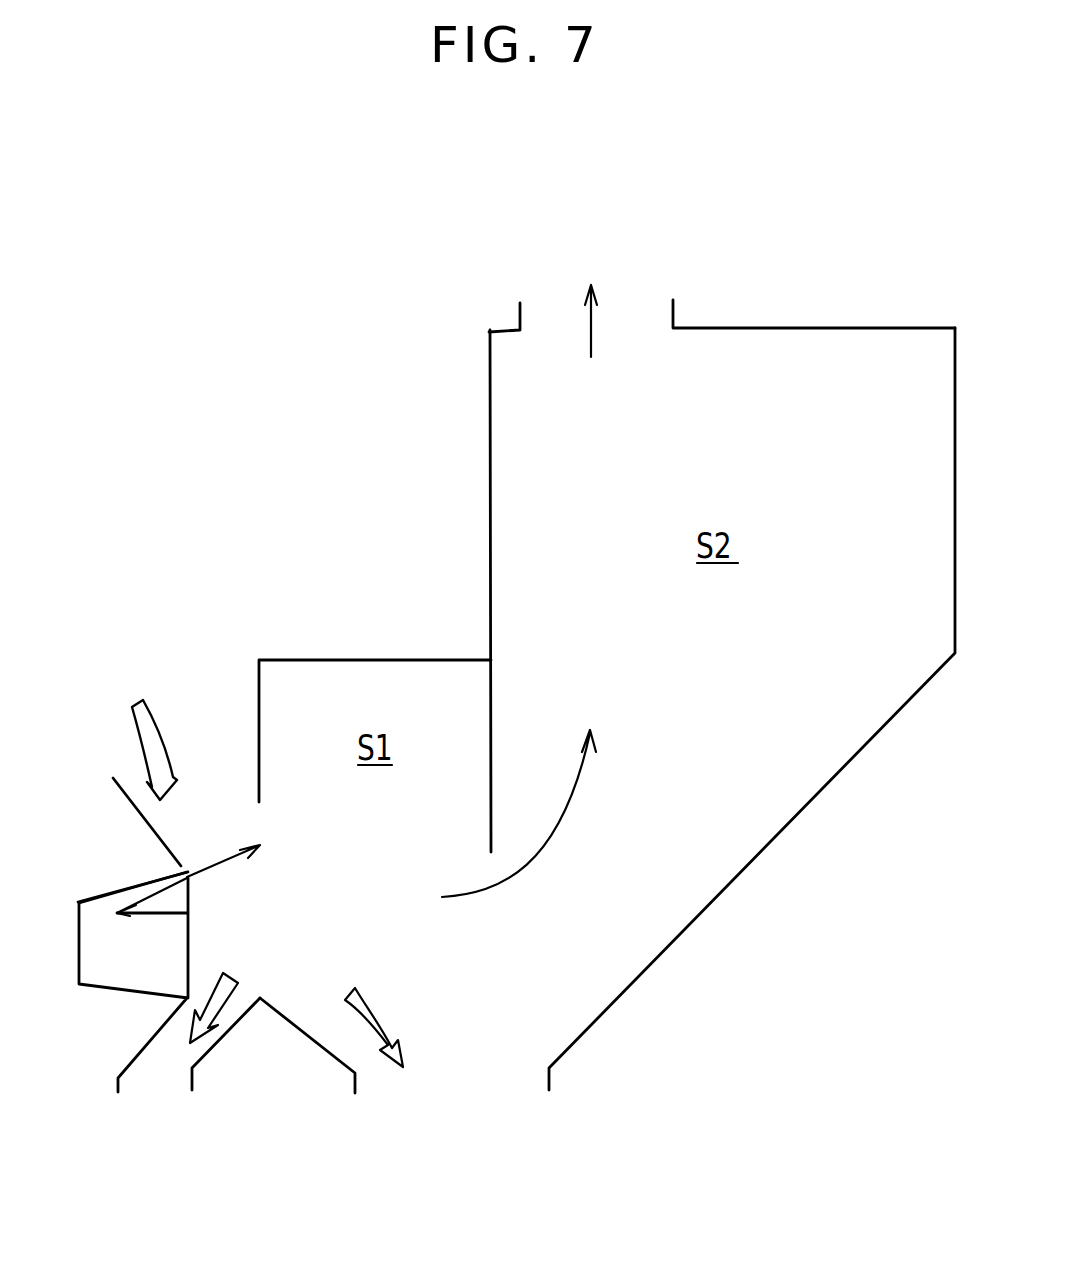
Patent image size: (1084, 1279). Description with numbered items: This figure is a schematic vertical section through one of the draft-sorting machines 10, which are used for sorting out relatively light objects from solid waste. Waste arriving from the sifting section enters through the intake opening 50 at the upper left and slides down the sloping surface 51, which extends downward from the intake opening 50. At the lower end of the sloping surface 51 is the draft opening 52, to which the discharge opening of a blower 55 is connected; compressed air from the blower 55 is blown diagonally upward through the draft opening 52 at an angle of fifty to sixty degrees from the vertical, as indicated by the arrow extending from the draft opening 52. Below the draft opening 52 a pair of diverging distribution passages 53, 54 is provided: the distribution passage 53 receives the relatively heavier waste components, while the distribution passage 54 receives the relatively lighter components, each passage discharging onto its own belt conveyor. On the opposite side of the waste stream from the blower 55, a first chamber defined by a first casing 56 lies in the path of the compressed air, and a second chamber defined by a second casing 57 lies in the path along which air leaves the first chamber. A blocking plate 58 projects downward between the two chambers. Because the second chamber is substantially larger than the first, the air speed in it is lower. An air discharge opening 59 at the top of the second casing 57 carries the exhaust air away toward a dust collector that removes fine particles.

The draft-sorting machine 10 is at (835, 928).
The intake opening 50 is at (223, 783).
The sloping surface 51 is at (135, 797).
The draft opening 52 is at (190, 878).
The distribution passage 53 is at (195, 1060).
The distribution passage 54 is at (365, 1065).
The blower 55 is at (138, 972).
The first casing 56 is at (320, 660).
The second casing 57 is at (800, 328).
The blocking plate 58 is at (486, 693).
The air discharge opening 59 is at (527, 307).